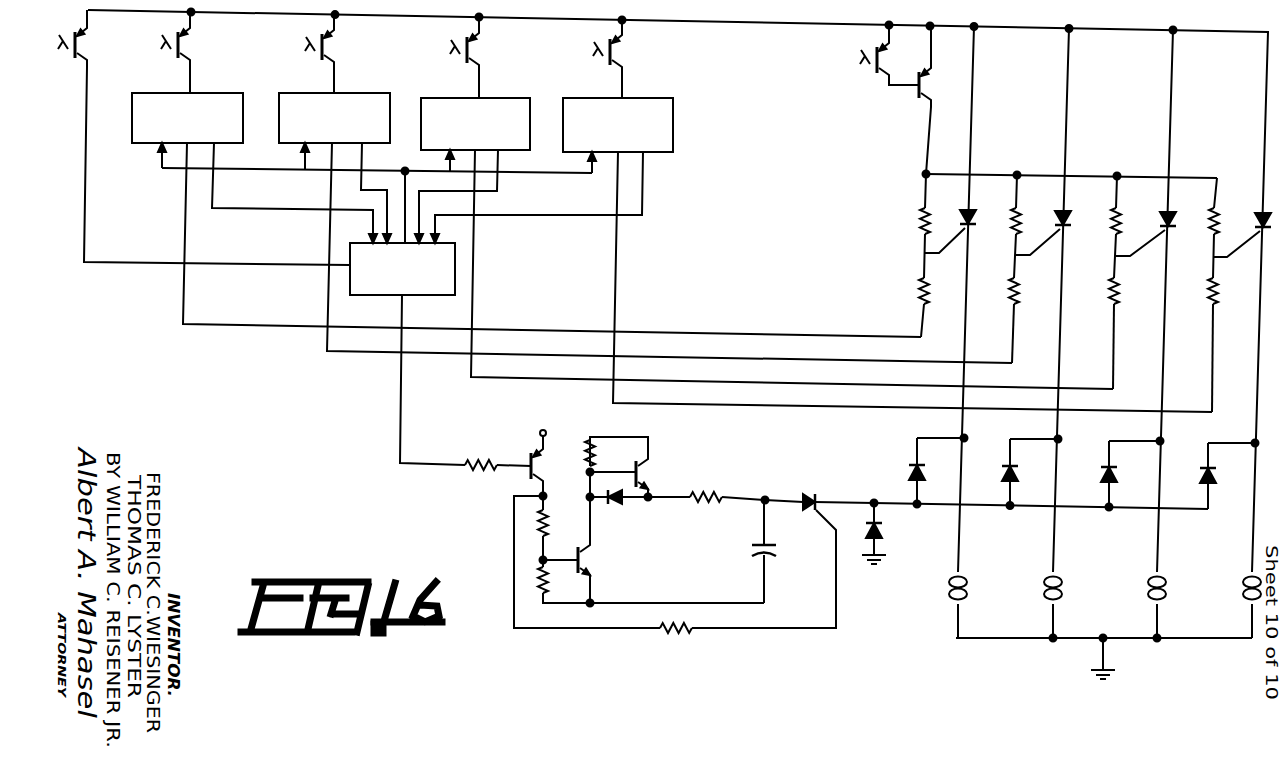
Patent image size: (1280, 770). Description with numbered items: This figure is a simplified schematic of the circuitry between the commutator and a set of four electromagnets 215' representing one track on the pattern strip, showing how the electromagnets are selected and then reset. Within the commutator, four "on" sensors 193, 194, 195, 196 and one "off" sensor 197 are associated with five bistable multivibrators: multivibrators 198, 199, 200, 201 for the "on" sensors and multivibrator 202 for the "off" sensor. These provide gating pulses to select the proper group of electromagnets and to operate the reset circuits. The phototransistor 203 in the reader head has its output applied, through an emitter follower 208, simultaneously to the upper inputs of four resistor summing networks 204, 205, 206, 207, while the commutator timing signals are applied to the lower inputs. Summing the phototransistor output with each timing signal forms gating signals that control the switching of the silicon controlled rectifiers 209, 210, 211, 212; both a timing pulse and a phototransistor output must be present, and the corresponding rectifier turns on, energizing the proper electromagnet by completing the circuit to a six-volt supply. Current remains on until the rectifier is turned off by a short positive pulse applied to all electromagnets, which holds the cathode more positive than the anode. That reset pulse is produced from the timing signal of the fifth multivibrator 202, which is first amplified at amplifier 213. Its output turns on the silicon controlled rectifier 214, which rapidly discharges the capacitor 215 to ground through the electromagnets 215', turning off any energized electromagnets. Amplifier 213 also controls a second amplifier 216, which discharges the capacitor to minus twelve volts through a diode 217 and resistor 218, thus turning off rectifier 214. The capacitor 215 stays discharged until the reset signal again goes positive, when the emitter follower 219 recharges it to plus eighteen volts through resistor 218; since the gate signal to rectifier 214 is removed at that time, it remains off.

The on sensor 193 is at (183, 43).
The on sensor 194 is at (327, 46).
The on sensor 195 is at (472, 50).
The on sensor 196 is at (615, 53).
The off sensor 197 is at (79, 48).
The bistable multivibrator 198 is at (200, 131).
The bistable multivibrator 199 is at (347, 131).
The bistable multivibrator 200 is at (488, 137).
The bistable multivibrator 201 is at (631, 138).
The bistable multivibrator 202 is at (415, 282).
The phototransistor 203 is at (884, 55).
The resistor summing network 204 is at (920, 317).
The resistor summing network 205 is at (1012, 331).
The resistor summing network 206 is at (1112, 334).
The resistor summing network 207 is at (1212, 337).
The emitter follower 208 is at (922, 91).
The silicon controlled rectifier 209 is at (966, 211).
The silicon controlled rectifier 210 is at (1061, 212).
The silicon controlled rectifier 211 is at (1165, 213).
The silicon controlled rectifier 212 is at (1260, 214).
The amplifier 213 is at (538, 468).
The silicon controlled rectifier 214 is at (817, 500).
The capacitor 215 is at (790, 564).
The electromagnets 215' is at (1083, 587).
The second amplifier 216 is at (584, 558).
The diode 217 is at (622, 504).
The resistor 218 is at (721, 496).
The emitter follower 219 is at (640, 471).